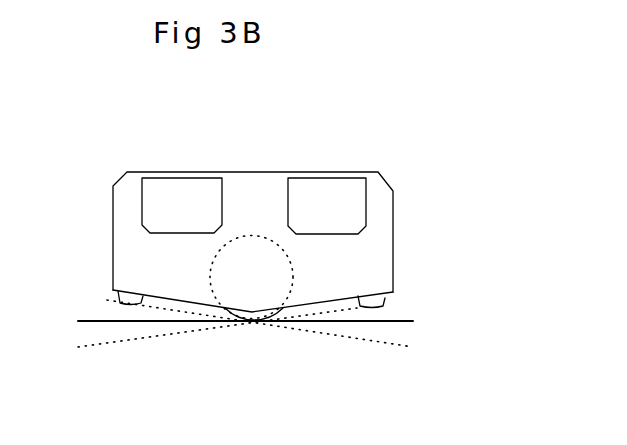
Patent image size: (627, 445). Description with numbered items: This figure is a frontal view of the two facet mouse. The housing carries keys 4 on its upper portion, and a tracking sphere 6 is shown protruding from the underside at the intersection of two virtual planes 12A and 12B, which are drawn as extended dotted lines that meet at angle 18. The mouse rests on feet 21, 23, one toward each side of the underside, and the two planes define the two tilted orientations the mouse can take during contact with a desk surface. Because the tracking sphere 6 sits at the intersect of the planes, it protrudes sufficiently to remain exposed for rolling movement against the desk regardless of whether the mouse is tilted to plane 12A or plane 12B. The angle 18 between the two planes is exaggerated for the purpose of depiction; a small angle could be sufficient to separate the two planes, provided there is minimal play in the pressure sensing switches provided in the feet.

The keys 4 is at (176, 208).
The tracking sphere 6 is at (227, 272).
The left foot 21 is at (125, 298).
The right foot 23 is at (380, 302).
The virtual plane 12A is at (164, 337).
The virtual plane 12B is at (363, 340).
The angle 18 is at (303, 331).